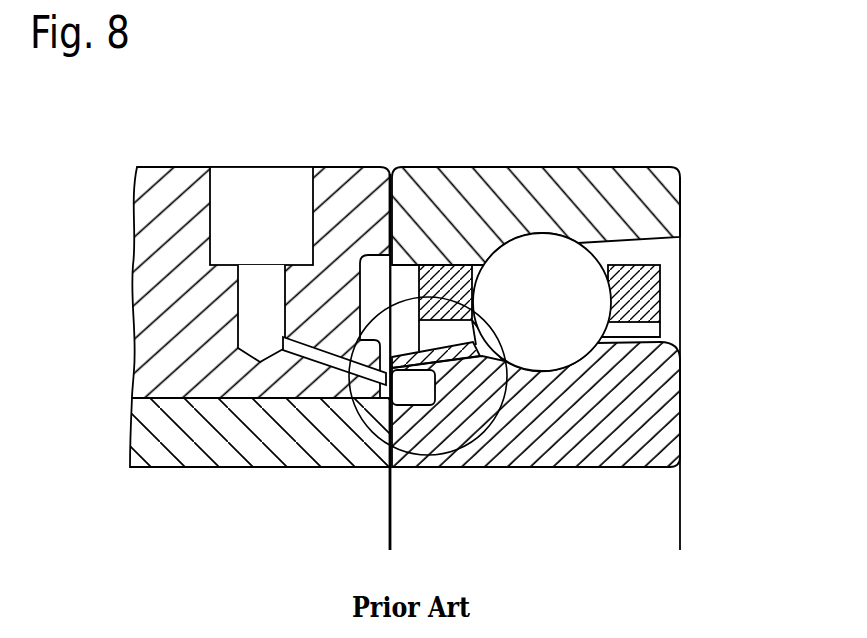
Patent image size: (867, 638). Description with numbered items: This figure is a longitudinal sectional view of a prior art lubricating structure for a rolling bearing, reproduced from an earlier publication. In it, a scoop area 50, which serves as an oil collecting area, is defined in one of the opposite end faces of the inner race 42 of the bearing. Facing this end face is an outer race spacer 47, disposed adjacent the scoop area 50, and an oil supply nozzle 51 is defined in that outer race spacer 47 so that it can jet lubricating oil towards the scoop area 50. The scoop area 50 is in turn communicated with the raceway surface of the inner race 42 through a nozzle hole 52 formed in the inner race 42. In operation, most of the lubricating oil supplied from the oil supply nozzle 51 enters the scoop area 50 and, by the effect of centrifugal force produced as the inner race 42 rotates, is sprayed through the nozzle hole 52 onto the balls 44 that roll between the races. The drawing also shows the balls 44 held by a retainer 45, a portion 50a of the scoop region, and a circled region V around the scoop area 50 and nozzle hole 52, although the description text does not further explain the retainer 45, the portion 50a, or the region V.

The inner race 42 is at (660, 370).
The balls 44 is at (539, 263).
The ball retainer 45 is at (660, 292).
The outer race spacer 47 is at (341, 156).
The scoop area 50 is at (415, 393).
The projection of ring nut 50a is at (424, 352).
The oil supply nozzle 51 is at (325, 357).
The nozzle hole 52 is at (458, 363).
The region V is at (486, 437).